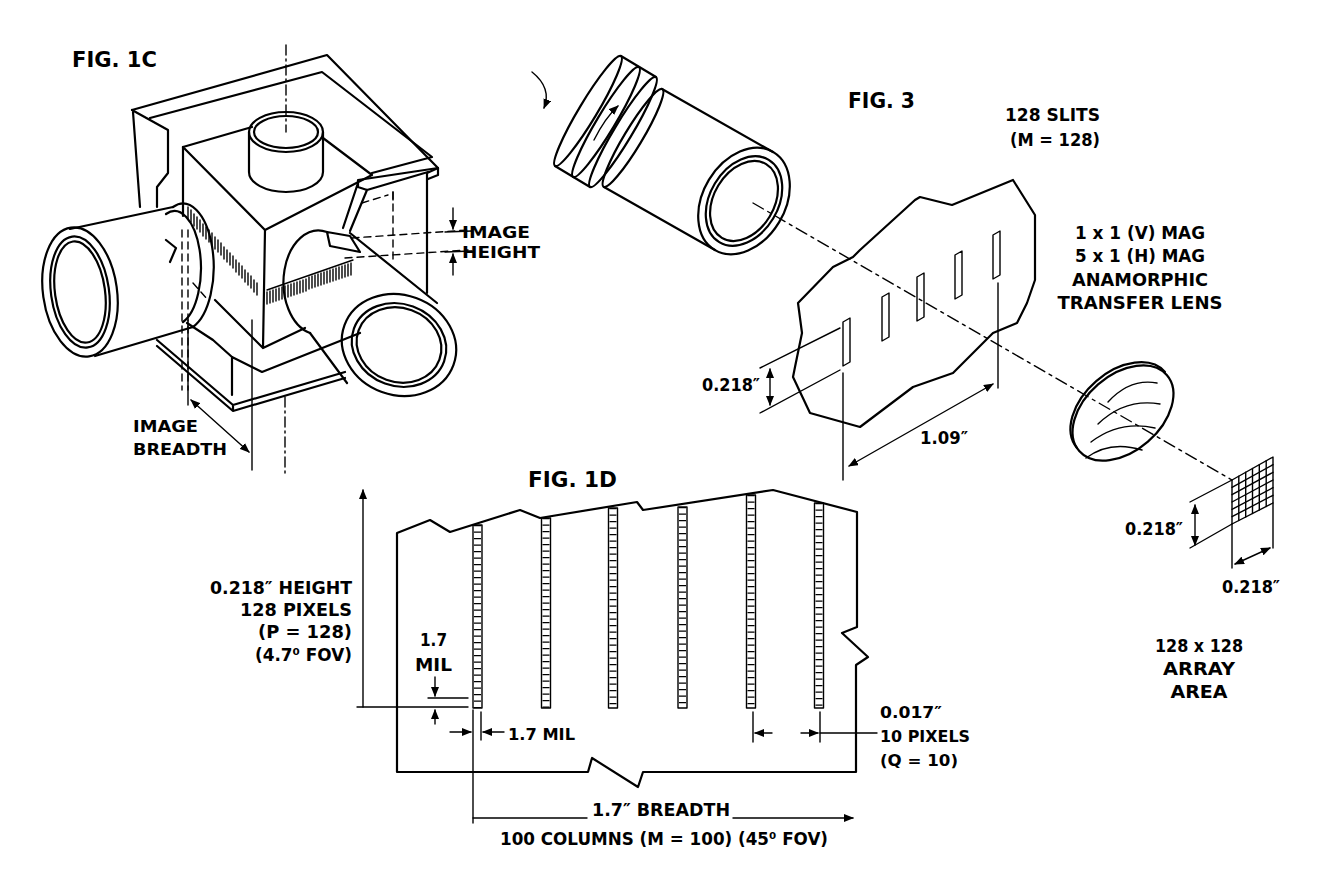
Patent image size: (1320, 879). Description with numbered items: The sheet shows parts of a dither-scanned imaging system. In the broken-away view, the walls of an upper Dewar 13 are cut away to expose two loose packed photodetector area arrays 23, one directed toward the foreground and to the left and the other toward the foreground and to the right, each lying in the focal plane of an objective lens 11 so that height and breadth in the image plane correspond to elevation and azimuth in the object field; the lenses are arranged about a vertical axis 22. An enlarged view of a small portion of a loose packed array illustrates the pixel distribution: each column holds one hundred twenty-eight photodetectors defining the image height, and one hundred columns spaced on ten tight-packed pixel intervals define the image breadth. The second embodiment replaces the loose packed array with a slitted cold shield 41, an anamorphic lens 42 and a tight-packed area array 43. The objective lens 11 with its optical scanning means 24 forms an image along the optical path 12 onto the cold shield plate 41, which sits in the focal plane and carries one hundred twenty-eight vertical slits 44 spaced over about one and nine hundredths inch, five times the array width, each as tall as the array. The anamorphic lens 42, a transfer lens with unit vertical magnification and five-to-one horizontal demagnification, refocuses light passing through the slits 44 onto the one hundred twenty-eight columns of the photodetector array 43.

In FIG. 3, the objective lens 11 is at (719, 119).
In FIG. 3, the optical axis 12 is at (797, 218).
In FIG. 1C, the upper Dewar 13 is at (225, 284).
In FIG. 1C, the vertical axis 22 is at (283, 52).
In FIG. 1C, the photodetector array 23 is at (248, 256).
In FIG. 3, the optical scanning means 24 is at (638, 64).
In FIG. 3, the slitted cold shield 41 is at (938, 197).
In FIG. 3, the anamorphic lens 42 is at (1138, 362).
In FIG. 3, the tight-packed area array 43 is at (1227, 526).
In FIG. 3, the vertical slits 44 is at (995, 219).